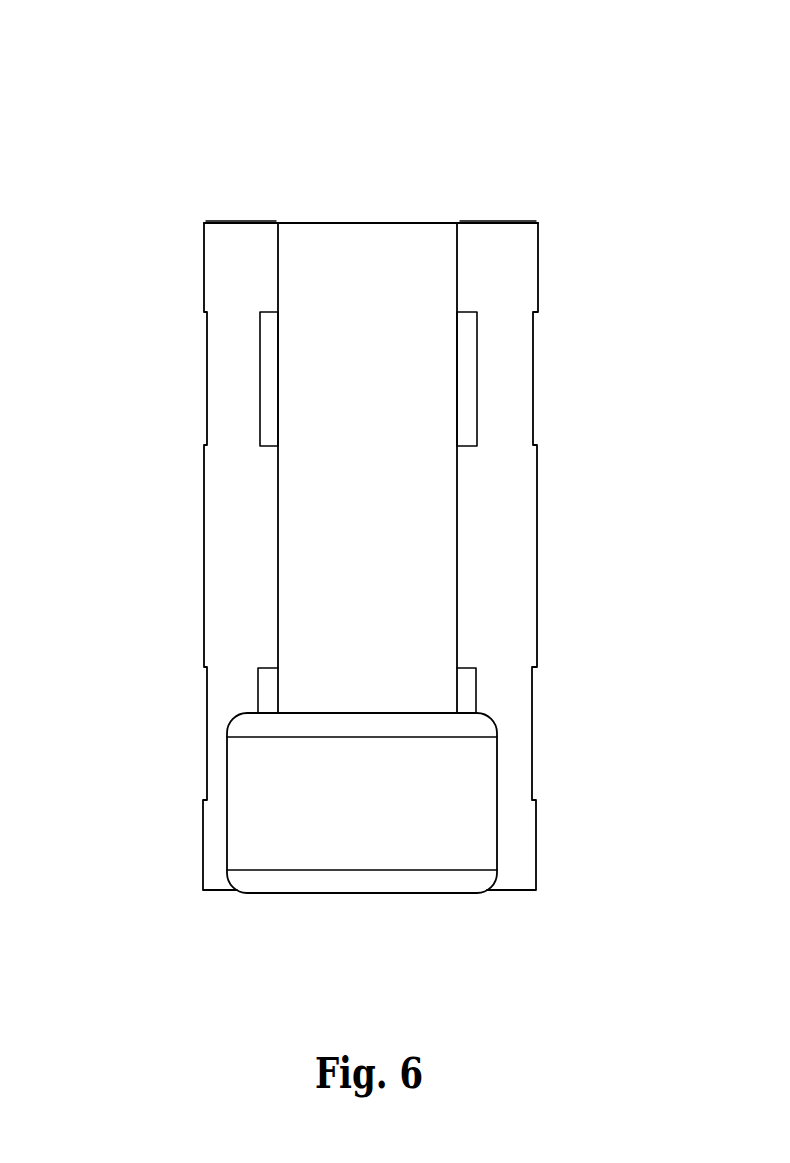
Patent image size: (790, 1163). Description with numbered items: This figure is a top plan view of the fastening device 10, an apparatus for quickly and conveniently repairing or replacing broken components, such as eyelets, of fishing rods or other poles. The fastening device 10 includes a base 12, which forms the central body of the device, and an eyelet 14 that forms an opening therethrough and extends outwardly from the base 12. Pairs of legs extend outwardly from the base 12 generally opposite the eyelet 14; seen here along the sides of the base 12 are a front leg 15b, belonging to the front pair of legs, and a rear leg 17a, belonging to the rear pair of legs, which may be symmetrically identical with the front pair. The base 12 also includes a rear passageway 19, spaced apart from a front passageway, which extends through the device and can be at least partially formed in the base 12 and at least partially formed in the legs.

The fastening device 10 is at (638, 102).
The base 12 is at (393, 573).
The eyelet 14 is at (453, 823).
The front leg 15b is at (202, 847).
The rear leg 17a is at (537, 270).
The rear passageway 19 is at (268, 382).